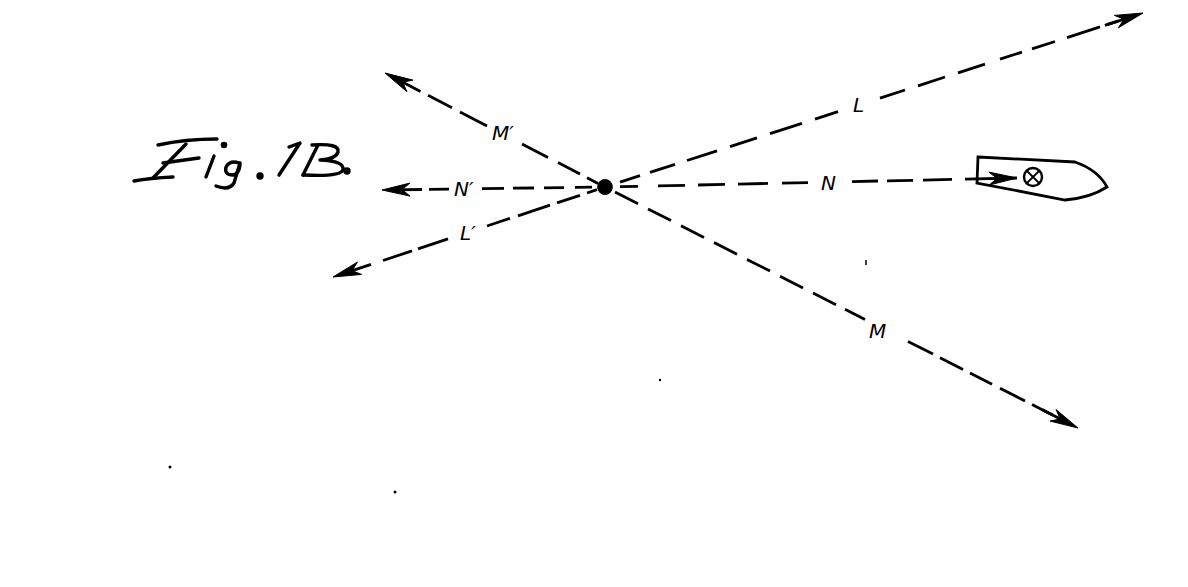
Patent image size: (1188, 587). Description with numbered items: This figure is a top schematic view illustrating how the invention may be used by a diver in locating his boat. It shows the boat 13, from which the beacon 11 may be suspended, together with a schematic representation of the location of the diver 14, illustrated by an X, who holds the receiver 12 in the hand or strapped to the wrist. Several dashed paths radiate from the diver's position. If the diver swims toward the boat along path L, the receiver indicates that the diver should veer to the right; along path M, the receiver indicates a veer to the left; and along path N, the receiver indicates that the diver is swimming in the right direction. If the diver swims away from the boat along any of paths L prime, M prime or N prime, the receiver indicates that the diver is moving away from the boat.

The beacon 11 is at (1035, 186).
The receiver 12 is at (603, 194).
The boat 13 is at (1006, 158).
The diver 14 is at (607, 180).